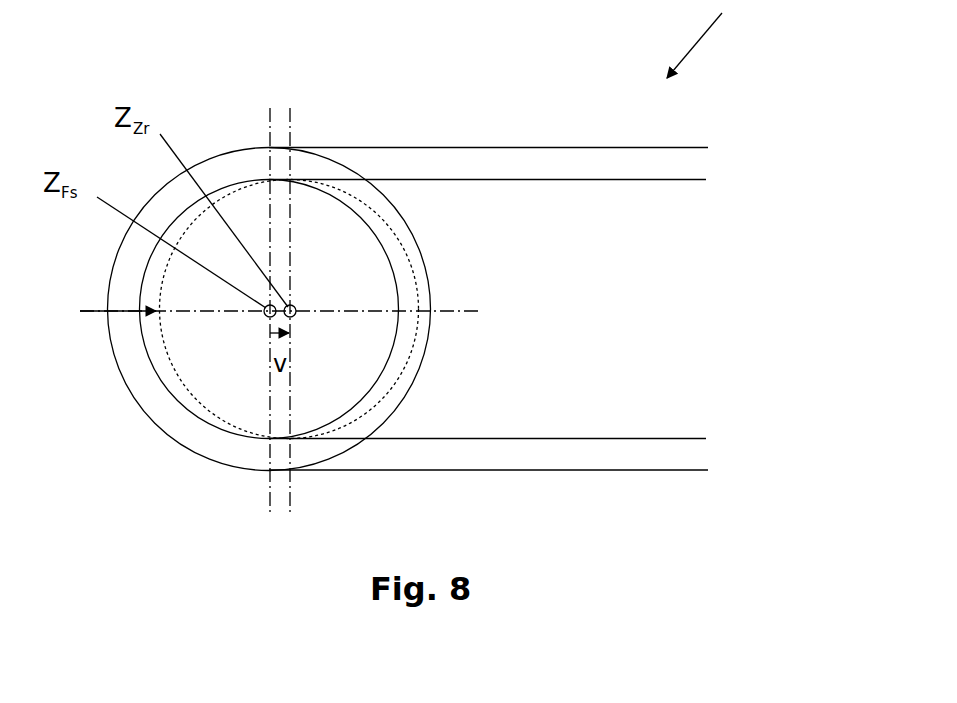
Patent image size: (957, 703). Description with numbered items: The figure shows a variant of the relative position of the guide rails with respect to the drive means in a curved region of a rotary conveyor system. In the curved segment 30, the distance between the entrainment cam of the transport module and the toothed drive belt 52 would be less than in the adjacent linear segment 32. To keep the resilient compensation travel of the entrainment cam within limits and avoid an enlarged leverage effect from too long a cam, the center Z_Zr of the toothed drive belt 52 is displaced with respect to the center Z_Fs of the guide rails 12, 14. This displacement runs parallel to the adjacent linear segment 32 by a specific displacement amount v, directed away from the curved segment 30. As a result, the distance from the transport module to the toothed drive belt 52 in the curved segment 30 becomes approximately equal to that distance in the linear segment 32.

The guide rail 12 is at (488, 106).
The guide rail 14 is at (500, 147).
The curved segment 30 is at (145, 424).
The linear segment 32 is at (570, 481).
The toothed drive belt 52 is at (603, 179).